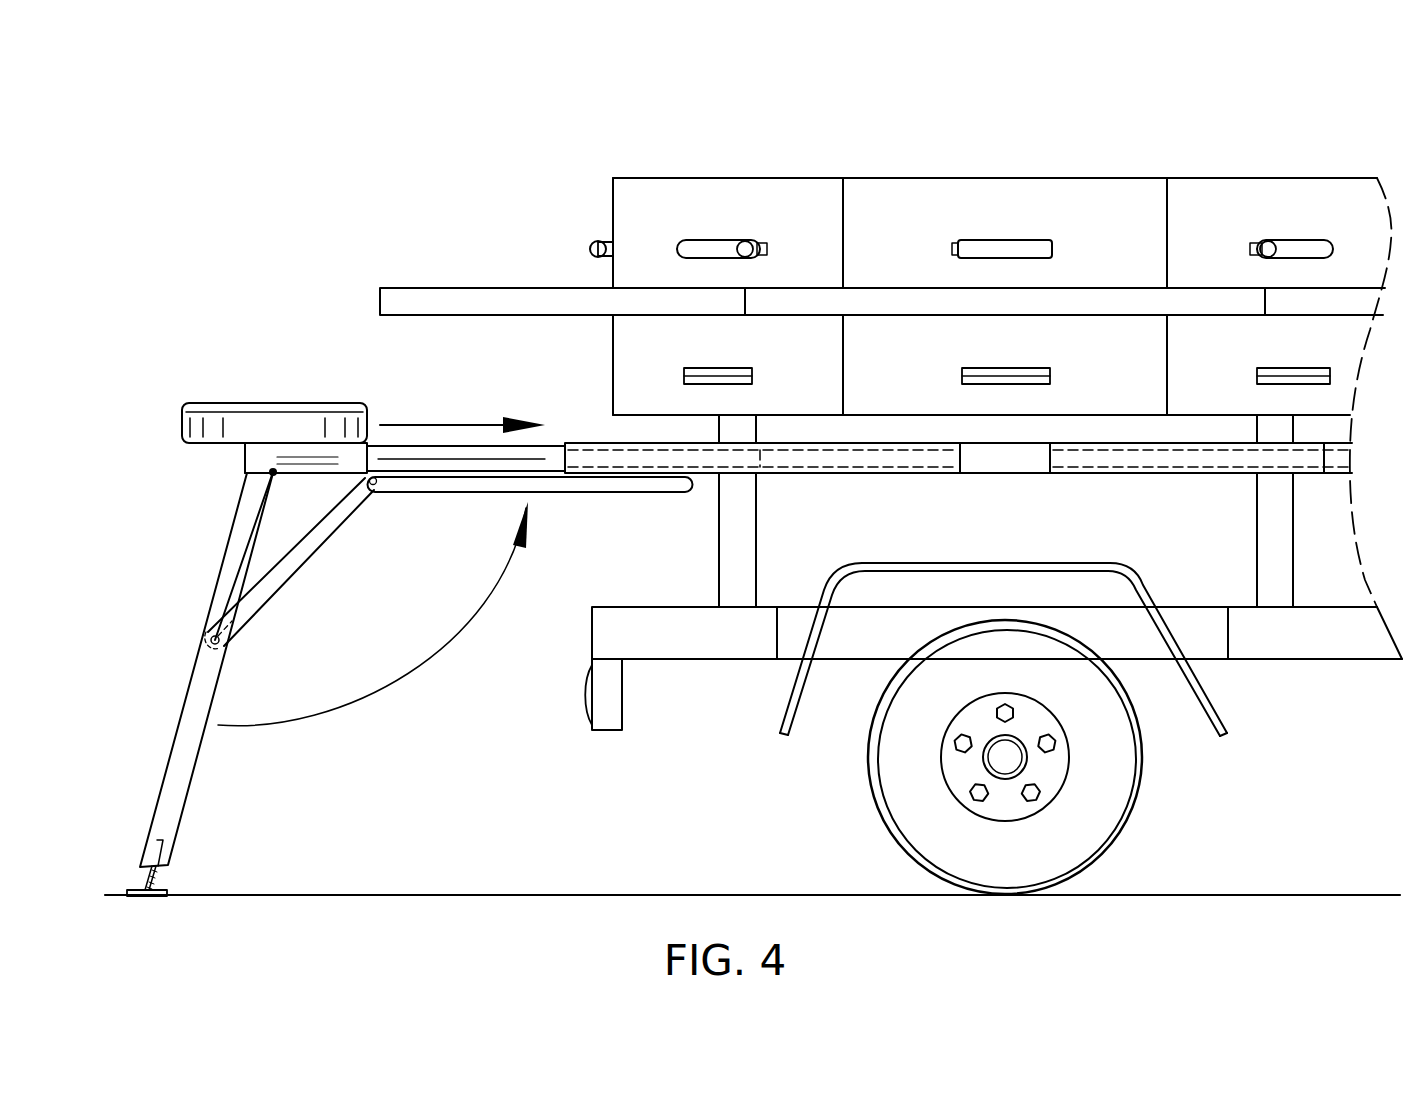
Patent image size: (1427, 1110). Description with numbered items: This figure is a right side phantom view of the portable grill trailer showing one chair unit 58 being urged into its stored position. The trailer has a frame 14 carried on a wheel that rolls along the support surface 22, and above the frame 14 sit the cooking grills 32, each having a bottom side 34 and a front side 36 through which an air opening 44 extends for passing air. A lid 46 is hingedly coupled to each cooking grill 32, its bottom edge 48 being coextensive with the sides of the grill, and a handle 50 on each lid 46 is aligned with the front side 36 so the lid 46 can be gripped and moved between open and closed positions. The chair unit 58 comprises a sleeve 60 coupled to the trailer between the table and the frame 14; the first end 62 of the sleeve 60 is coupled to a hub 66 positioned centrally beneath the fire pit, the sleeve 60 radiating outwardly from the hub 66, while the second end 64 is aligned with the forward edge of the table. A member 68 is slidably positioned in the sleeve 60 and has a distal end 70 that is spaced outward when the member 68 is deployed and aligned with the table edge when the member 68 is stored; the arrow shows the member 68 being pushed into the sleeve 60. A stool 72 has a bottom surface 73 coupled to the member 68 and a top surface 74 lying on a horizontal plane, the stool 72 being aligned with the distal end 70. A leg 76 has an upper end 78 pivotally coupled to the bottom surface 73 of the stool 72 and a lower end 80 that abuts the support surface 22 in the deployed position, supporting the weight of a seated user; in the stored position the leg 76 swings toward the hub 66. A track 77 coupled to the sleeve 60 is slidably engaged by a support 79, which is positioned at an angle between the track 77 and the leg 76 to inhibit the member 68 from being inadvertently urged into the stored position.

The frame 14 is at (755, 645).
The support surface 22 is at (1280, 895).
The cooking grill 32 is at (642, 317).
The bottom side 34 is at (663, 417).
The front side 36 is at (625, 350).
The air opening 44 is at (1262, 375).
The lid 46 is at (767, 178).
The bottom edge 48 is at (1341, 289).
The handle 50 is at (708, 248).
The chair unit 58 is at (205, 360).
The sleeve 60 is at (885, 470).
The first end 62 is at (962, 462).
The second end 64 is at (566, 447).
The hub 66 is at (1042, 470).
The member 68 is at (416, 447).
The distal end 70 is at (248, 457).
The stool 72 is at (352, 402).
The bottom surface 73 is at (313, 452).
The top surface 74 is at (230, 403).
The leg 76 is at (190, 683).
The track 77 is at (563, 492).
The upper end 78 is at (248, 455).
The support 79 is at (270, 598).
The lower end 80 is at (160, 875).